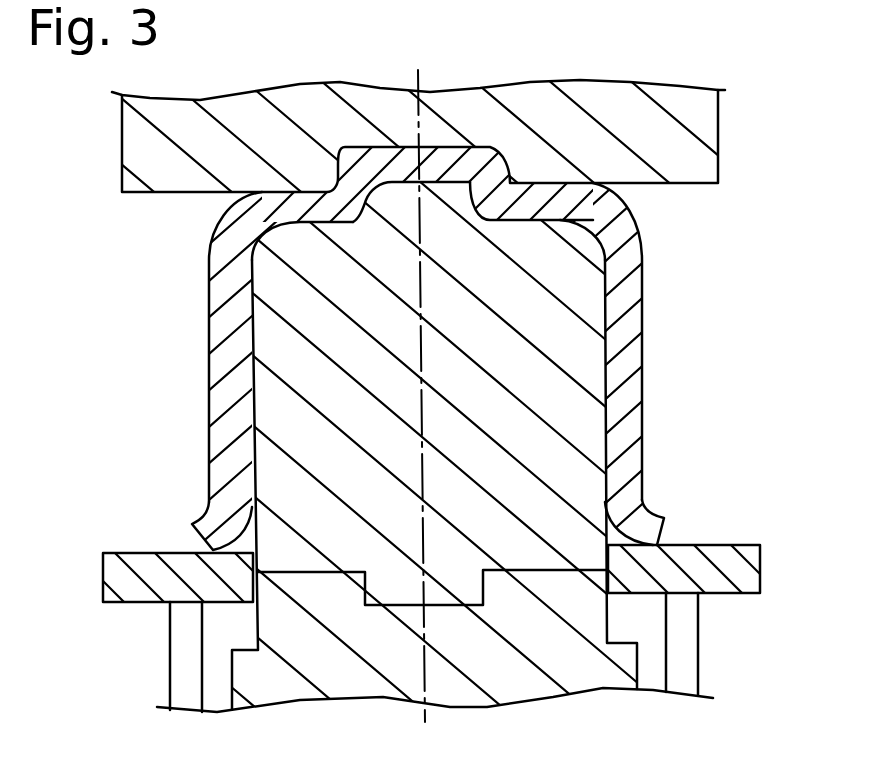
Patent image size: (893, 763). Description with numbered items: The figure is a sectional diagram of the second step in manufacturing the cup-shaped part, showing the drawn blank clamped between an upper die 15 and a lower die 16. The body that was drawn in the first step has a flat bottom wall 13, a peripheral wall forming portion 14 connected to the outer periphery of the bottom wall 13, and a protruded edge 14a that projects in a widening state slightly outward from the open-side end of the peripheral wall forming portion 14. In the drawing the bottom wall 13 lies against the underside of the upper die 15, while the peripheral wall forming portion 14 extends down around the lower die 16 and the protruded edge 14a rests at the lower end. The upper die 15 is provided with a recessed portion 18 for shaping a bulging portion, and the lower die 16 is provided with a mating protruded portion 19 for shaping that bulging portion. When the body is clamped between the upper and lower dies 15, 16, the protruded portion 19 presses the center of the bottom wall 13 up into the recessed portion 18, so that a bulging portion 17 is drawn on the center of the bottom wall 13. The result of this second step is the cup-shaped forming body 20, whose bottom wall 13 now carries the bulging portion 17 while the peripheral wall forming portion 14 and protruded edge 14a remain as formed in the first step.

The bottom wall 13 is at (537, 193).
The peripheral wall forming portion 14 is at (460, 334).
The protruded edge 14a is at (663, 533).
The upper die 15 is at (693, 142).
The lower die 16 is at (428, 381).
The bulging portion 17 is at (430, 118).
The recessed portion 18 is at (385, 230).
The protruded portion 19 is at (383, 193).
The cup-shaped forming body 20 is at (658, 290).